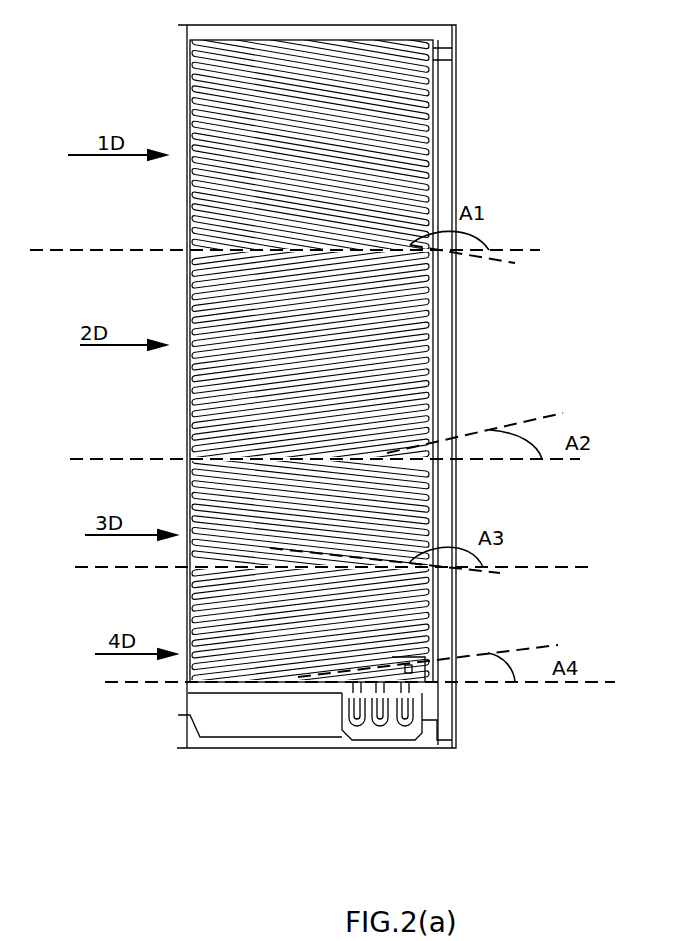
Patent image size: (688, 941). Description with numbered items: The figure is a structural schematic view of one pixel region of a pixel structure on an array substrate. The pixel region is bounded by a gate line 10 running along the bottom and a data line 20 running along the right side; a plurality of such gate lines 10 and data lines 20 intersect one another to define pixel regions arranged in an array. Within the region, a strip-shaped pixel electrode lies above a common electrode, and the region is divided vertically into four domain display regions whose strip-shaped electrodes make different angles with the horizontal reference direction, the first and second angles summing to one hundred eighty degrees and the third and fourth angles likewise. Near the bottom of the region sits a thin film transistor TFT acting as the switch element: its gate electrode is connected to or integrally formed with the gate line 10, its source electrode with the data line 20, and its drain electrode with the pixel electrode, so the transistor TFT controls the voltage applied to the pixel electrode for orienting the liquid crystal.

The data line 20 is at (447, 108).
The gate line 10 is at (232, 713).
The thin film transistor TFT is at (358, 723).